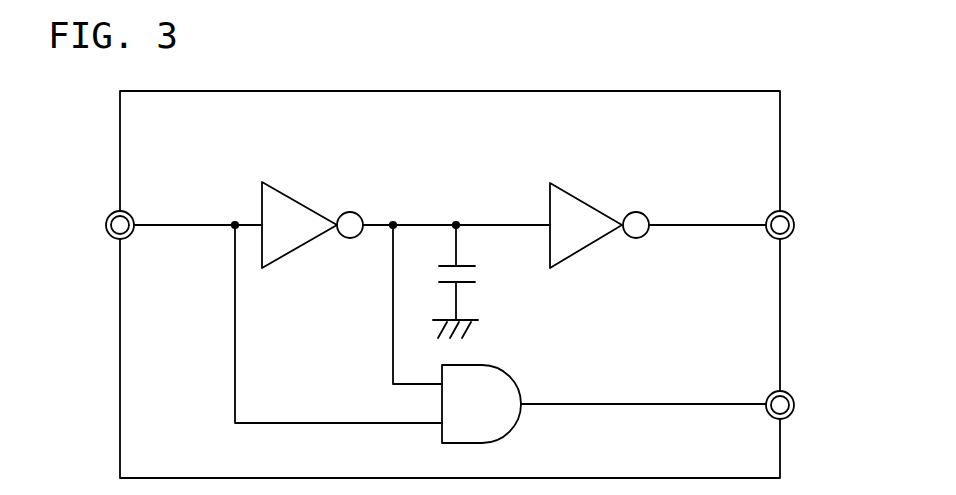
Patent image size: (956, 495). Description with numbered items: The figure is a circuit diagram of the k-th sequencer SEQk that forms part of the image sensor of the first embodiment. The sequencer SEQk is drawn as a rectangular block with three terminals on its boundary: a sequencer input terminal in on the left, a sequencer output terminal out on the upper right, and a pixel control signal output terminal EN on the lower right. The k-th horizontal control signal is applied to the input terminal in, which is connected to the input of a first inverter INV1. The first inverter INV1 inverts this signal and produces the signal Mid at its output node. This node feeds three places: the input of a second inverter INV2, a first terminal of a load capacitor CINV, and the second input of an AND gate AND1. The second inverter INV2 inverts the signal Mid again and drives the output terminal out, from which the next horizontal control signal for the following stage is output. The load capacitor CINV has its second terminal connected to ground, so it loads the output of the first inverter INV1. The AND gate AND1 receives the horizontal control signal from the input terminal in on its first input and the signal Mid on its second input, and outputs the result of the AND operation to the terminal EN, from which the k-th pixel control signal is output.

The k-th sequencer SEQk is at (645, 90).
The sequencer input terminal in is at (103, 225).
The first inverter INV1 is at (293, 195).
The signal Mid is at (502, 222).
The second inverter INV2 is at (577, 198).
The sequencer output terminal out is at (804, 225).
The load capacitor CINV is at (479, 283).
The AND gate AND1 is at (513, 375).
The pixel control signal output terminal EN is at (799, 406).